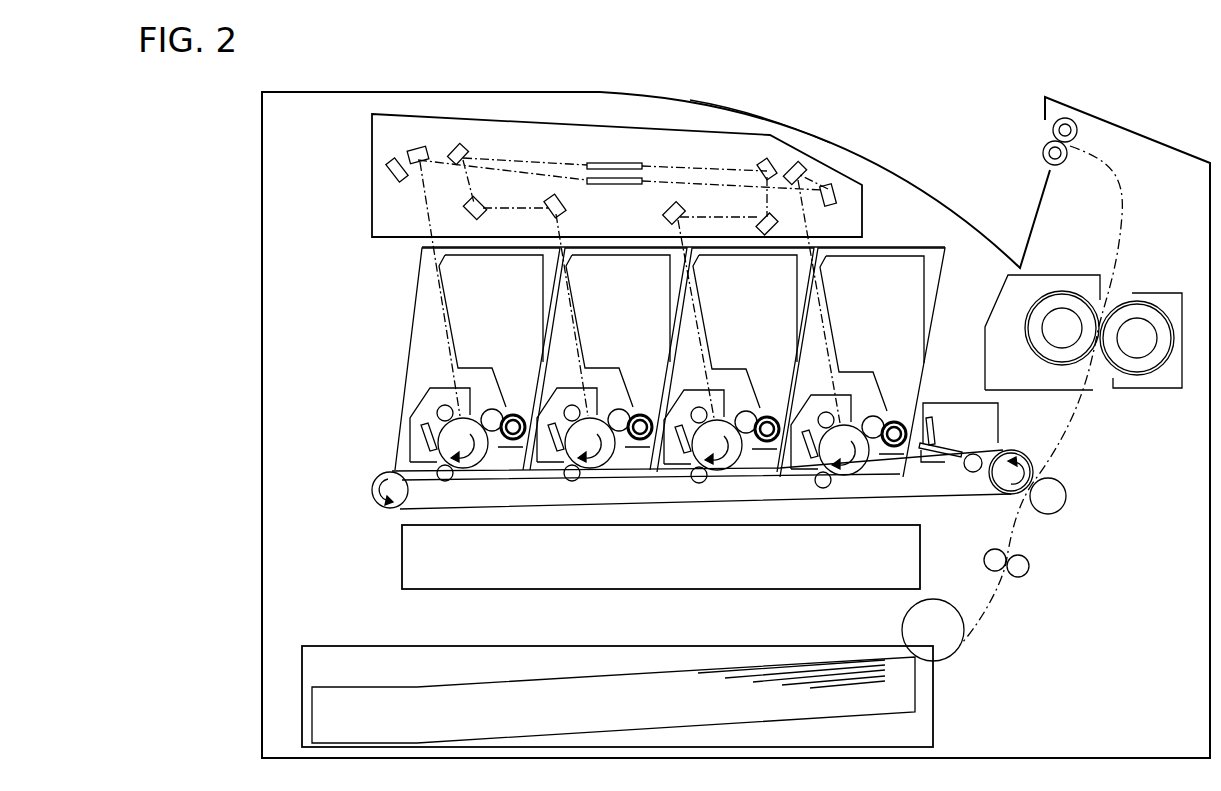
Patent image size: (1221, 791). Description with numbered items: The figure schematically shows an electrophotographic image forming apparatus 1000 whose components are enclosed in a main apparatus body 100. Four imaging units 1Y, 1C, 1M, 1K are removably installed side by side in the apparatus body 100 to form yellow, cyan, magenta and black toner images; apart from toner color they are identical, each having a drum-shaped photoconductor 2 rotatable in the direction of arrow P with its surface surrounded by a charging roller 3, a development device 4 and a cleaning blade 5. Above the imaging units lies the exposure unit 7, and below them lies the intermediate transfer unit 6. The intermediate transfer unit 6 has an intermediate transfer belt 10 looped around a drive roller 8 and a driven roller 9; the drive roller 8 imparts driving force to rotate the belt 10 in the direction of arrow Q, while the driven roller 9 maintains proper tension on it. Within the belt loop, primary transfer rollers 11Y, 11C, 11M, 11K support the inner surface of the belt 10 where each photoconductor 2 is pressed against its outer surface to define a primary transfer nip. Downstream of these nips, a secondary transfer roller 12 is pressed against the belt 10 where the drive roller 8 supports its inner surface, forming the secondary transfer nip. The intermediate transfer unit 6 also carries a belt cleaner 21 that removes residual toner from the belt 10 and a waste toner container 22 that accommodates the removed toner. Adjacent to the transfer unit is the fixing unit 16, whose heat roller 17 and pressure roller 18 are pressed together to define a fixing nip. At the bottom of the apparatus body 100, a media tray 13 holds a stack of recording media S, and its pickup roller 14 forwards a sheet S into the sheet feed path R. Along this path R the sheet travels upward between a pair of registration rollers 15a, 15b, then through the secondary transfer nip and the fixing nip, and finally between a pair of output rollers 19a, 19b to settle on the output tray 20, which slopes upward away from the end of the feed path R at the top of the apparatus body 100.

The image forming apparatus 1000 is at (228, 166).
The main apparatus body 100 is at (262, 312).
The exposure unit 7 is at (372, 176).
The output tray 20 is at (830, 143).
The imaging unit 1K is at (497, 247).
The imaging unit 1M is at (525, 247).
The imaging unit 1C is at (735, 271).
The imaging unit 1Y is at (862, 309).
The photoconductor 2 is at (484, 454).
The charging roller 3 is at (443, 405).
The development device 4 is at (481, 351).
The cleaning blade 5 is at (423, 428).
The direction of photoconductor rotation P is at (475, 461).
The intermediate transfer unit 6 is at (682, 492).
The drive roller 8 is at (990, 485).
The driven roller 9 is at (372, 495).
The intermediate transfer belt 10 is at (453, 509).
The primary transfer roller 11K is at (452, 480).
The primary transfer roller 11M is at (579, 480).
The primary transfer roller 11C is at (706, 482).
The primary transfer roller 11Y is at (829, 488).
The direction of belt rotation Q is at (740, 511).
The belt cleaner 21 is at (962, 403).
The secondary transfer roller 12 is at (1067, 497).
The waste toner container 22 is at (690, 590).
The media tray 13 is at (350, 646).
The recording media S is at (686, 713).
The pickup roller 14 is at (942, 602).
The registration roller 15a is at (1006, 553).
The registration roller 15b is at (1029, 570).
The fixing unit 16 is at (1083, 362).
The heat roller 17 is at (1057, 365).
The pressure roller 18 is at (1143, 375).
The output roller 19a is at (1053, 130).
The output roller 19b is at (1043, 153).
The sheet feed path R is at (1127, 237).